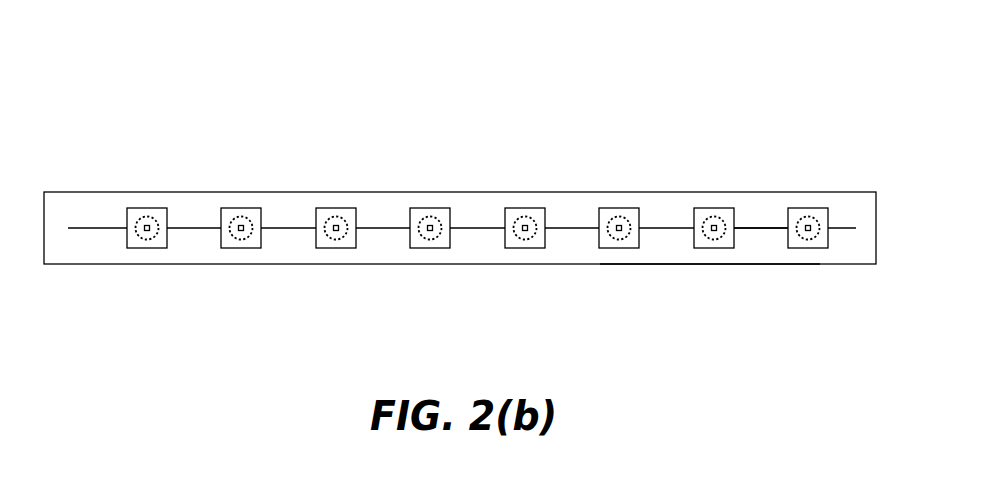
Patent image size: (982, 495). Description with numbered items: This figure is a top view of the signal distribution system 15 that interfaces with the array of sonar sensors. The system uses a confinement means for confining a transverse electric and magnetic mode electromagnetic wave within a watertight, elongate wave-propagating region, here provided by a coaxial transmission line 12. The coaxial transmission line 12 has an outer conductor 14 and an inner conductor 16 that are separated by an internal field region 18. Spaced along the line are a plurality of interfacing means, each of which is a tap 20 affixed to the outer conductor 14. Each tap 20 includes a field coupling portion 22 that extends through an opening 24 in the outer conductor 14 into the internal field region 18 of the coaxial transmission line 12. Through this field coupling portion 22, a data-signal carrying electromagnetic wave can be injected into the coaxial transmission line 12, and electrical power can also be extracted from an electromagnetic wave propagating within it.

The coaxial transmission line 12 is at (758, 192).
The outer conductor 14 is at (710, 264).
The signal distribution system 15 is at (460, 186).
The inner conductor 16 is at (757, 230).
The internal field region 18 is at (192, 248).
The tap 20 is at (323, 245).
The field coupling portion 22 is at (335, 227).
The opening 24 is at (338, 237).